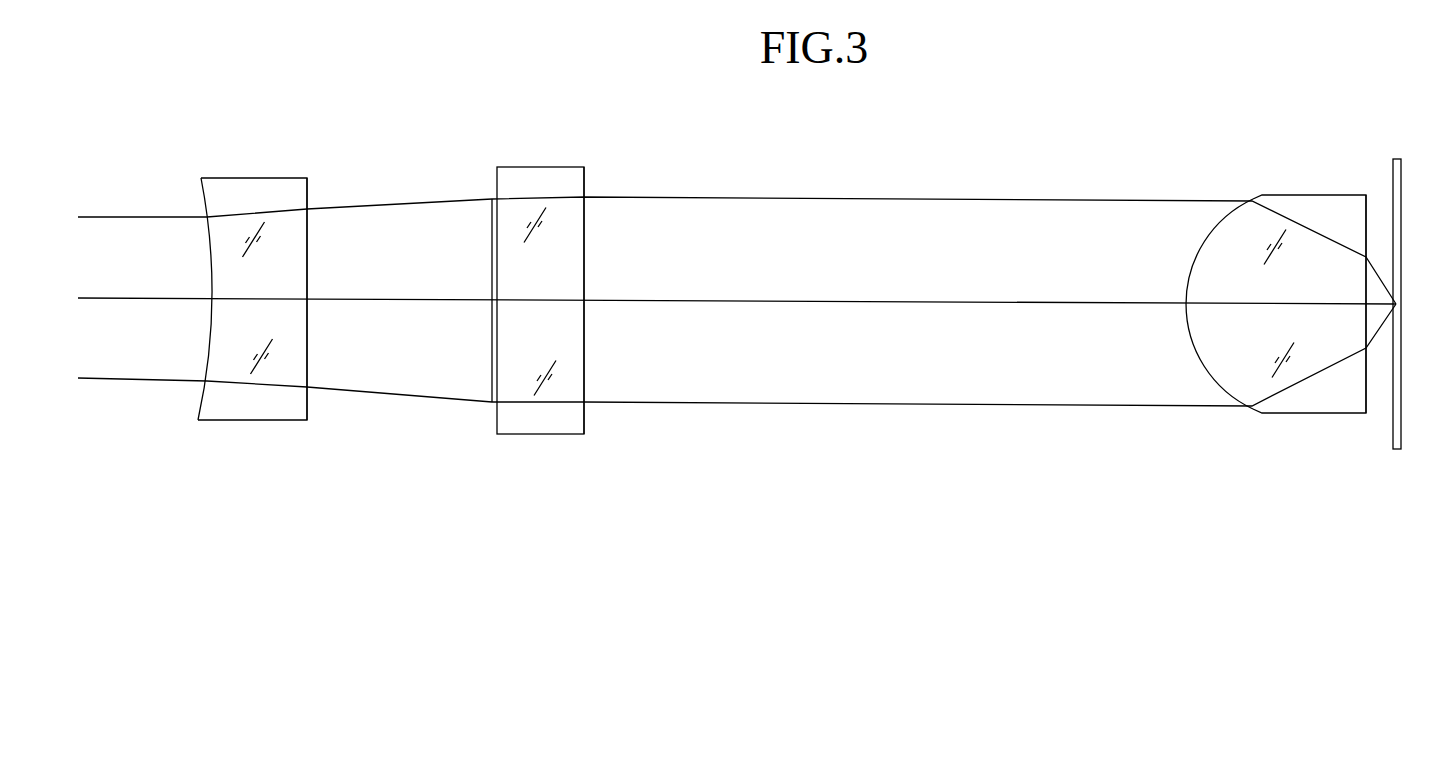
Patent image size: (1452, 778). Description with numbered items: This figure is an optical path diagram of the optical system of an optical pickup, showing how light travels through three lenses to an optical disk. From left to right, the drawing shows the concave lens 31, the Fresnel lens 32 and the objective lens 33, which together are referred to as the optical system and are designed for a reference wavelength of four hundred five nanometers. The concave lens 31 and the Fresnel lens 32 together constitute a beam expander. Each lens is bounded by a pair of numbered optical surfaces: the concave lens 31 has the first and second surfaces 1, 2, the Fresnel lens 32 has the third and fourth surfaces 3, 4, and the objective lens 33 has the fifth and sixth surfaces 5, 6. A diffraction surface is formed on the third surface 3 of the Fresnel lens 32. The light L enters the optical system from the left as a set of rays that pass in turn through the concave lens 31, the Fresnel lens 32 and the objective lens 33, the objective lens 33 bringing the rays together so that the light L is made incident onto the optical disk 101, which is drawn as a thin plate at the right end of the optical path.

The light L is at (113, 216).
The first surface 1 is at (207, 246).
The second surface 2 is at (307, 248).
The third surface 3 is at (492, 228).
The fourth surface 4 is at (584, 232).
The fifth surface 5 is at (1213, 230).
The sixth surface 6 is at (1366, 212).
The concave lens 31 is at (243, 178).
The Fresnel lens 32 is at (543, 167).
The objective lens 33 is at (1298, 195).
The optical disk 101 is at (1396, 159).